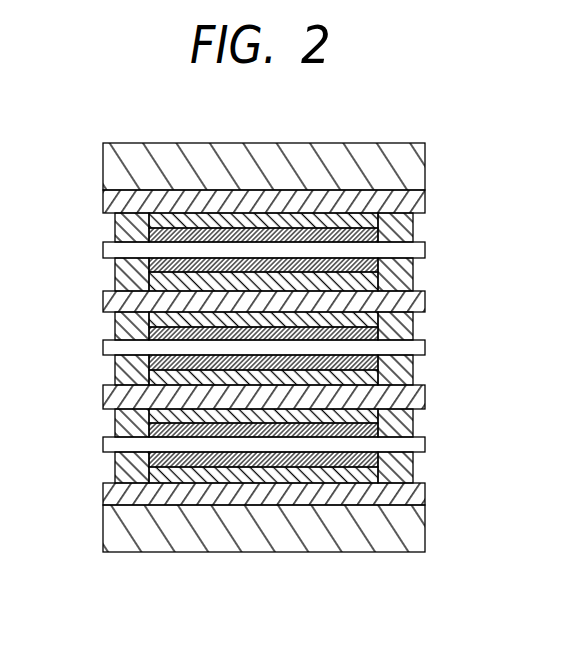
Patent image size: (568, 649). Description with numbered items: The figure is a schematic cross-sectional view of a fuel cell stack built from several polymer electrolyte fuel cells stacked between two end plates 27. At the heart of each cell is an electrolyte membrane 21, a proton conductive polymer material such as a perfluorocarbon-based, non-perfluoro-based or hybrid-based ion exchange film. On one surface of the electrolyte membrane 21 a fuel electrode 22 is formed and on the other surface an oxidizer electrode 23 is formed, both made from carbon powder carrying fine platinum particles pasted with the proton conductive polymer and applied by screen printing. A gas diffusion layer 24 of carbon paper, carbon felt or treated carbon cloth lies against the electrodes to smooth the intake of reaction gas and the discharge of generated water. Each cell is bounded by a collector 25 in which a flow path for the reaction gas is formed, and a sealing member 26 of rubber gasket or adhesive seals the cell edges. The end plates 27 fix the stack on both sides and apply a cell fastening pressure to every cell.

The electrolyte membrane 21 is at (415, 348).
The fuel electrode 22 is at (385, 363).
The oxidizer electrode 23 is at (383, 333).
The gas diffusion layer 24 is at (158, 323).
The collector 25 is at (413, 300).
The sealing member 26 is at (115, 370).
The end plate 27 is at (341, 158).